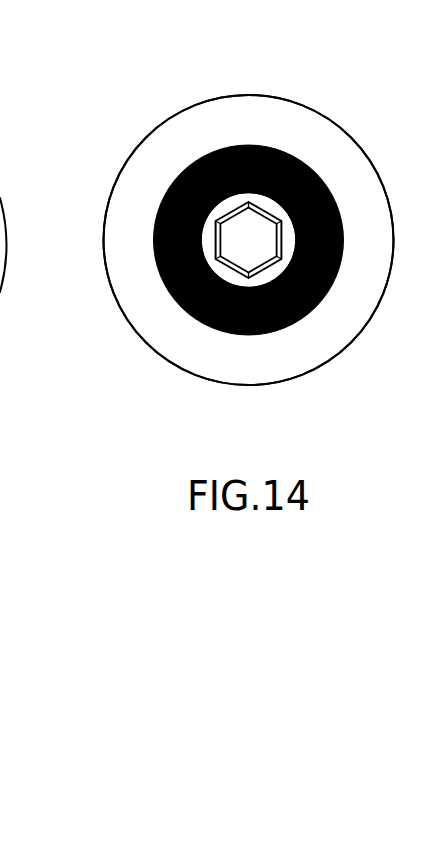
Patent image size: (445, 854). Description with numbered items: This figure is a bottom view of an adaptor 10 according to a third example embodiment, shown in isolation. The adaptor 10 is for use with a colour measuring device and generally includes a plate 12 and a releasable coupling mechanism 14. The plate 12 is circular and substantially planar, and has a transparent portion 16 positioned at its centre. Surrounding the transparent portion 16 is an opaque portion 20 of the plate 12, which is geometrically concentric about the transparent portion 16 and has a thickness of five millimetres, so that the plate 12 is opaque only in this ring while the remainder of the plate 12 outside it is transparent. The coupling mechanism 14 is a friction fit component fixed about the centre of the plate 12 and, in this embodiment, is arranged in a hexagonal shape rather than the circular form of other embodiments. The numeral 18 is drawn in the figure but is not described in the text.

The adaptor 10 is at (195, 72).
The plate 12 is at (242, 93).
The coupling mechanism 14 is at (230, 267).
The transparent portion 16 is at (257, 228).
The inner sleeve 18 is at (263, 265).
The opaque portion 20 is at (312, 172).